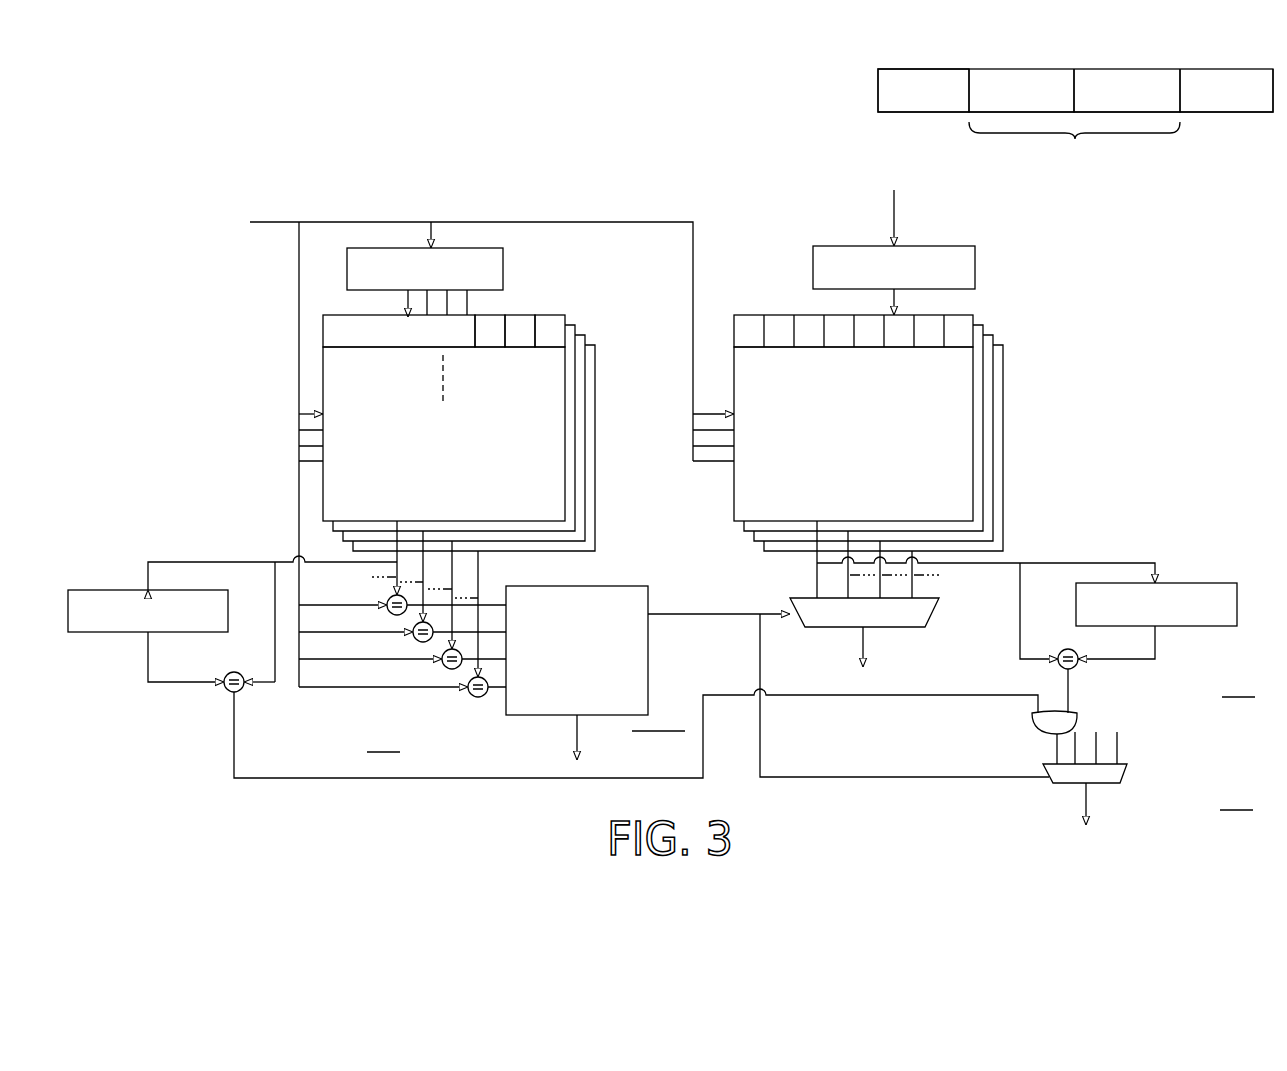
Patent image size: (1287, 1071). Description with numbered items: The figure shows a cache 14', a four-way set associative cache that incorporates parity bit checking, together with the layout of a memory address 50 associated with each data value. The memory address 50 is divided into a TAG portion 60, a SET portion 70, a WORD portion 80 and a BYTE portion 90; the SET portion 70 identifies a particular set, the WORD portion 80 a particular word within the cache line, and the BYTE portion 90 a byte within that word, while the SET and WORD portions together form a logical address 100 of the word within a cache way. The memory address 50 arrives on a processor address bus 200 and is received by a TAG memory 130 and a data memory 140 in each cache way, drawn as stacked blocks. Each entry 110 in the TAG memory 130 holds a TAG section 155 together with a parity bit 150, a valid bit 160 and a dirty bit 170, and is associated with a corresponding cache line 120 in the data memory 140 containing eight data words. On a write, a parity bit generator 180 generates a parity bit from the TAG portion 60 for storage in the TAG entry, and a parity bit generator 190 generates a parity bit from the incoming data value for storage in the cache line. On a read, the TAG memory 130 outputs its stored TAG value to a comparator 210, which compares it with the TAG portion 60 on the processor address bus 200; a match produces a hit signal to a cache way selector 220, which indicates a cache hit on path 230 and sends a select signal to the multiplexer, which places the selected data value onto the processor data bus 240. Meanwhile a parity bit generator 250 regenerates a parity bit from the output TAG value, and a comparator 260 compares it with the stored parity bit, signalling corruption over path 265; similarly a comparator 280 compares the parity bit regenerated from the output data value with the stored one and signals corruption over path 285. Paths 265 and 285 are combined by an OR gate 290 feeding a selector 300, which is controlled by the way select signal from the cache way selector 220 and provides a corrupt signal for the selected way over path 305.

The cache 14' is at (311, 140).
The memory address 50 is at (860, 78).
The TAG portion 60 is at (924, 69).
The SET portion 70 is at (1024, 69).
The WORD portion 80 is at (1130, 69).
The BYTE portion 90 is at (1226, 69).
The logical address 100 is at (1074, 147).
The entry 110 is at (606, 318).
The cache line 120 is at (1012, 318).
The TAG memory 130 is at (323, 502).
The data memory 140 is at (734, 499).
The parity bit 150 is at (500, 316).
The TAG section 155 is at (340, 317).
The valid bit 160 is at (530, 316).
The dirty bit 170 is at (567, 315).
The parity bit generator 180 is at (504, 254).
The parity bit generator 190 is at (975, 268).
The processor address bus 200 is at (380, 221).
The comparator 210 is at (389, 598).
The cache way selector 220 is at (648, 649).
The path 230 is at (577, 745).
The processor data bus 240 is at (862, 649).
The parity bit generator 250 is at (100, 590).
The comparator 260 is at (227, 691).
The path 265 is at (233, 752).
The comparator 280 is at (1058, 667).
The path 285 is at (1069, 690).
The OR gate 290 is at (1033, 722).
The selector 300 is at (1128, 774).
The path 305 is at (1085, 800).